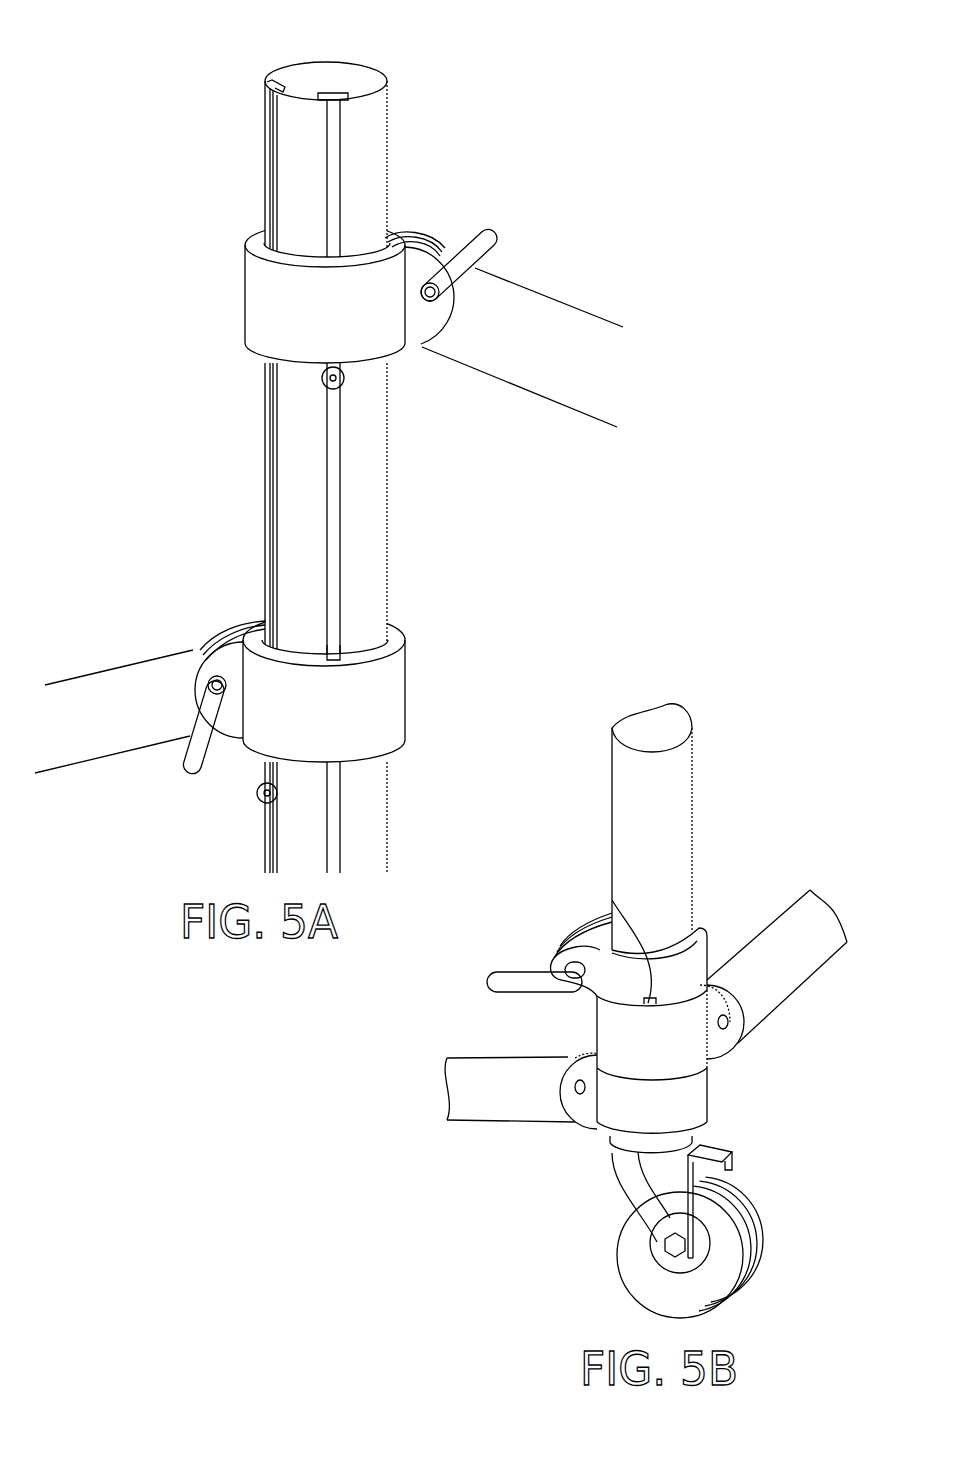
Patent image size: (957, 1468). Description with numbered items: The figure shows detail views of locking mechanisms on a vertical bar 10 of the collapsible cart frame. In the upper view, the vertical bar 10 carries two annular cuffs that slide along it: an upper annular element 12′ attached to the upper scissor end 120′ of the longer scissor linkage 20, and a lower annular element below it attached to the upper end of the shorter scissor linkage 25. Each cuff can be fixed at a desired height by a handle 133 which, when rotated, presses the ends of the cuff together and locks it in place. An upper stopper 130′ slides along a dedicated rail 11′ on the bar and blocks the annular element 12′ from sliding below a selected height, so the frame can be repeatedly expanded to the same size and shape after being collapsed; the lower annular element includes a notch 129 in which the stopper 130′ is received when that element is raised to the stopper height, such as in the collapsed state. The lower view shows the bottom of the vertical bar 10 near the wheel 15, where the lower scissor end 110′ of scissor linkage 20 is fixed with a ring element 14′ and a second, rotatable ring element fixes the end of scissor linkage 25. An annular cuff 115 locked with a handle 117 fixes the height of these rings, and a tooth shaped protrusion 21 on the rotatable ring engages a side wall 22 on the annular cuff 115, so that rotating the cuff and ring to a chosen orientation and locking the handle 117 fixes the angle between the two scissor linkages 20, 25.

In FIG. 5A, the vertical bar 10 is at (370, 508).
In FIG. 5B, the vertical bar 10 is at (675, 813).
In FIG. 5A, the rail 11′ is at (337, 94).
In FIG. 5A, the upper annular element 12′ is at (402, 250).
In FIG. 5A, the notch 129 is at (341, 652).
In FIG. 5A, the upper stopper 130′ is at (322, 378).
In FIG. 5A, the handle 133 is at (495, 236).
In FIG. 5A, the upper scissor end 120′ is at (433, 358).
In FIG. 5A, the scissor linkage 20 is at (588, 335).
In FIG. 5B, the scissor linkage 20 is at (803, 962).
In FIG. 5A, the scissor linkage 25 is at (103, 697).
In FIG. 5B, the scissor linkage 25 is at (477, 1105).
In FIG. 5B, the ring element 14′ is at (613, 1030).
In FIG. 5B, the wheel 15 is at (735, 1265).
In FIG. 5B, the tooth shaped protrusion 21 is at (707, 1002).
In FIG. 5B, the side wall 22 is at (612, 925).
In FIG. 5B, the lower scissor end 110′ is at (741, 1046).
In FIG. 5B, the annular cuff 115 is at (698, 965).
In FIG. 5B, the handle 117 is at (513, 981).